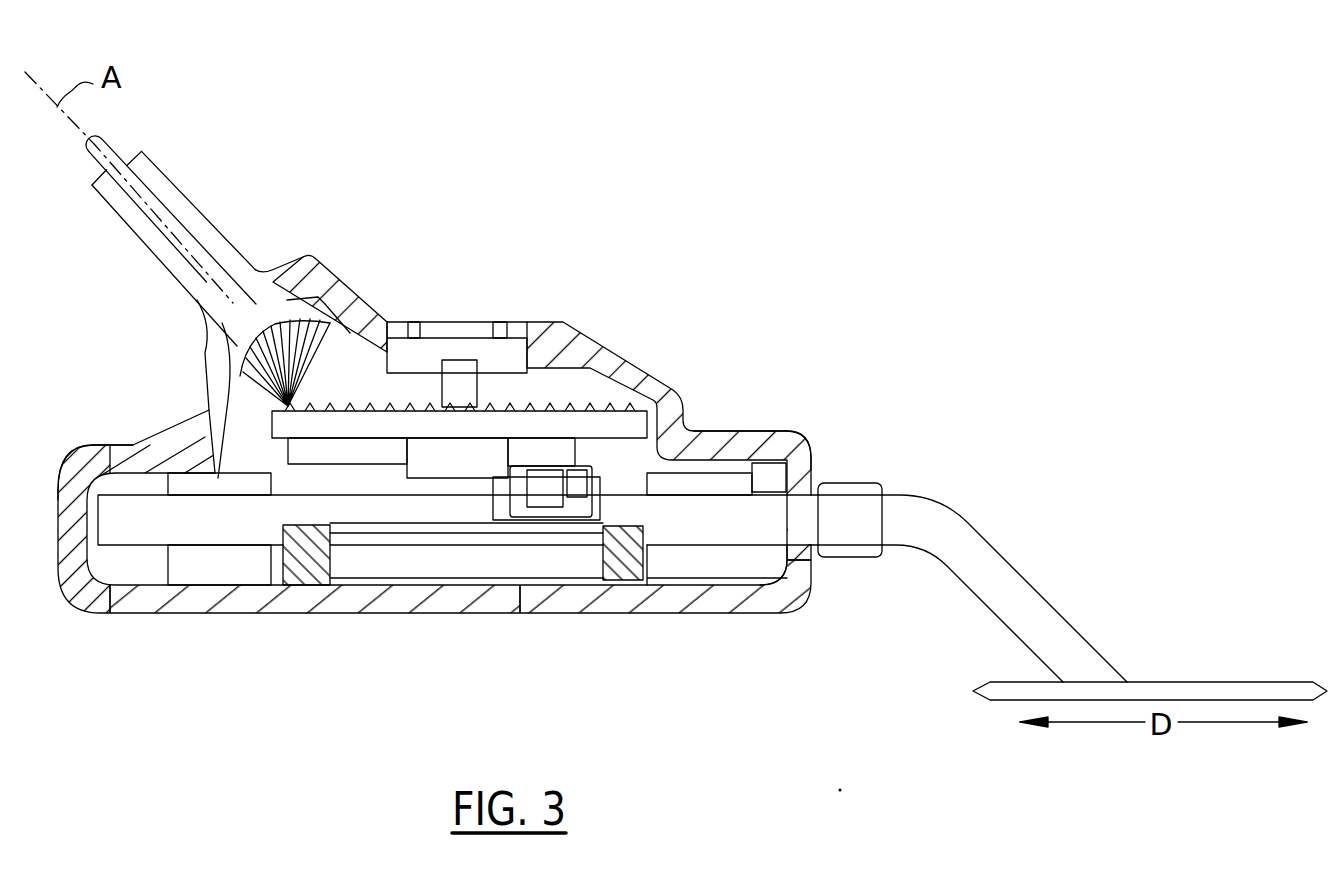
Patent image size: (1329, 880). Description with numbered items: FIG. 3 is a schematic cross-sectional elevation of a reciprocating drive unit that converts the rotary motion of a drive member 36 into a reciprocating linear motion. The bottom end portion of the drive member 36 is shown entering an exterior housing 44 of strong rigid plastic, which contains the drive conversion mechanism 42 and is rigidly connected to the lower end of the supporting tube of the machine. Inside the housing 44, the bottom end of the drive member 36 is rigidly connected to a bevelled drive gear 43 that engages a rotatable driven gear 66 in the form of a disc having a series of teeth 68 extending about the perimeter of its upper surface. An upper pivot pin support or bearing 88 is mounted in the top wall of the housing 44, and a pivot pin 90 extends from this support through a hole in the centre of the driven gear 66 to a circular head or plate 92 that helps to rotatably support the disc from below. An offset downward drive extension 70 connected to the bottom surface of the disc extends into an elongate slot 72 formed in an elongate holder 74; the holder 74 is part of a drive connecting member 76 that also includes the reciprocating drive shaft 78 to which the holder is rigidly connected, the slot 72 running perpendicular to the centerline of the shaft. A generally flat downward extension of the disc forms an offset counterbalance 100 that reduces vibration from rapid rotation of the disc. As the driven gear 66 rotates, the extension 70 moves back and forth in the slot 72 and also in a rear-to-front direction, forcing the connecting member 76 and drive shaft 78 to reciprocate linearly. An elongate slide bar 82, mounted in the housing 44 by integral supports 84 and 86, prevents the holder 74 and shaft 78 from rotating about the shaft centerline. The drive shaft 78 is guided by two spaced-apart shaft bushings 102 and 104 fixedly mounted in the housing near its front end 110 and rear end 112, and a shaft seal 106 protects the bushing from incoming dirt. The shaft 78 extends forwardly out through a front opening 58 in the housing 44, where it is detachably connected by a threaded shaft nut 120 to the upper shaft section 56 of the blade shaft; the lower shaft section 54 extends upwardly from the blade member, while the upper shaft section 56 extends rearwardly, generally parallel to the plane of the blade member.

The drive member 36 is at (155, 196).
The drive conversion mechanism 42 is at (567, 390).
The bevelled drive gear 43 is at (330, 340).
The housing 44 is at (550, 337).
The lower shaft section 54 is at (1022, 582).
The upper shaft section 56 is at (950, 497).
The front opening 58 is at (823, 483).
The driven gear 66 is at (632, 424).
The teeth 68 is at (553, 400).
The drive extension 70 is at (575, 503).
The elongate slot 72 is at (512, 517).
The elongate holder 74 is at (490, 503).
The drive connecting member 76 is at (653, 533).
The reciprocating drive shaft 78 is at (725, 533).
The slide bar 82 is at (350, 533).
The integral support 84 is at (287, 570).
The integral support 86 is at (618, 570).
The upper pivot pin support 88 is at (437, 360).
The pivot pin 90 is at (463, 373).
The circular head 92 is at (427, 455).
The offset counterbalance 100 is at (277, 458).
The shaft bushing 102 is at (185, 570).
The shaft bushing 104 is at (743, 573).
The shaft seal 106 is at (792, 455).
The front end 110 is at (776, 470).
The rear end 112 is at (93, 447).
The threaded shaft nut 120 is at (873, 487).